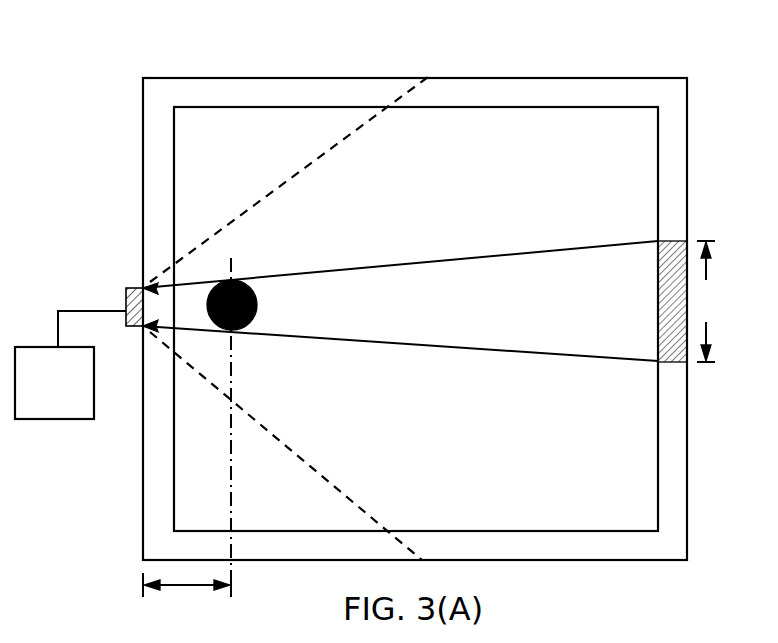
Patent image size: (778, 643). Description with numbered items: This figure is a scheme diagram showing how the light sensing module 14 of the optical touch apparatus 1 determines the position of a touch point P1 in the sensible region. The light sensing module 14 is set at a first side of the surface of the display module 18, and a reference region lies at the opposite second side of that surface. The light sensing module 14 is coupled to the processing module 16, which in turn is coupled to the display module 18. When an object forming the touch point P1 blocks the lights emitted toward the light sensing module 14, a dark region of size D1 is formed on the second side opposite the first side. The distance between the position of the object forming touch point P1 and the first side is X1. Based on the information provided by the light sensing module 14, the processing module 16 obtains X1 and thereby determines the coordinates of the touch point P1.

The optical touch apparatus 1 is at (512, 53).
The light sensing module 14 is at (126, 290).
The processing module 16 is at (44, 420).
The display module 18 is at (178, 92).
The touch point P1 is at (215, 323).
The size of dark region D1 is at (709, 301).
The distance between touch point and first side X1 is at (187, 597).